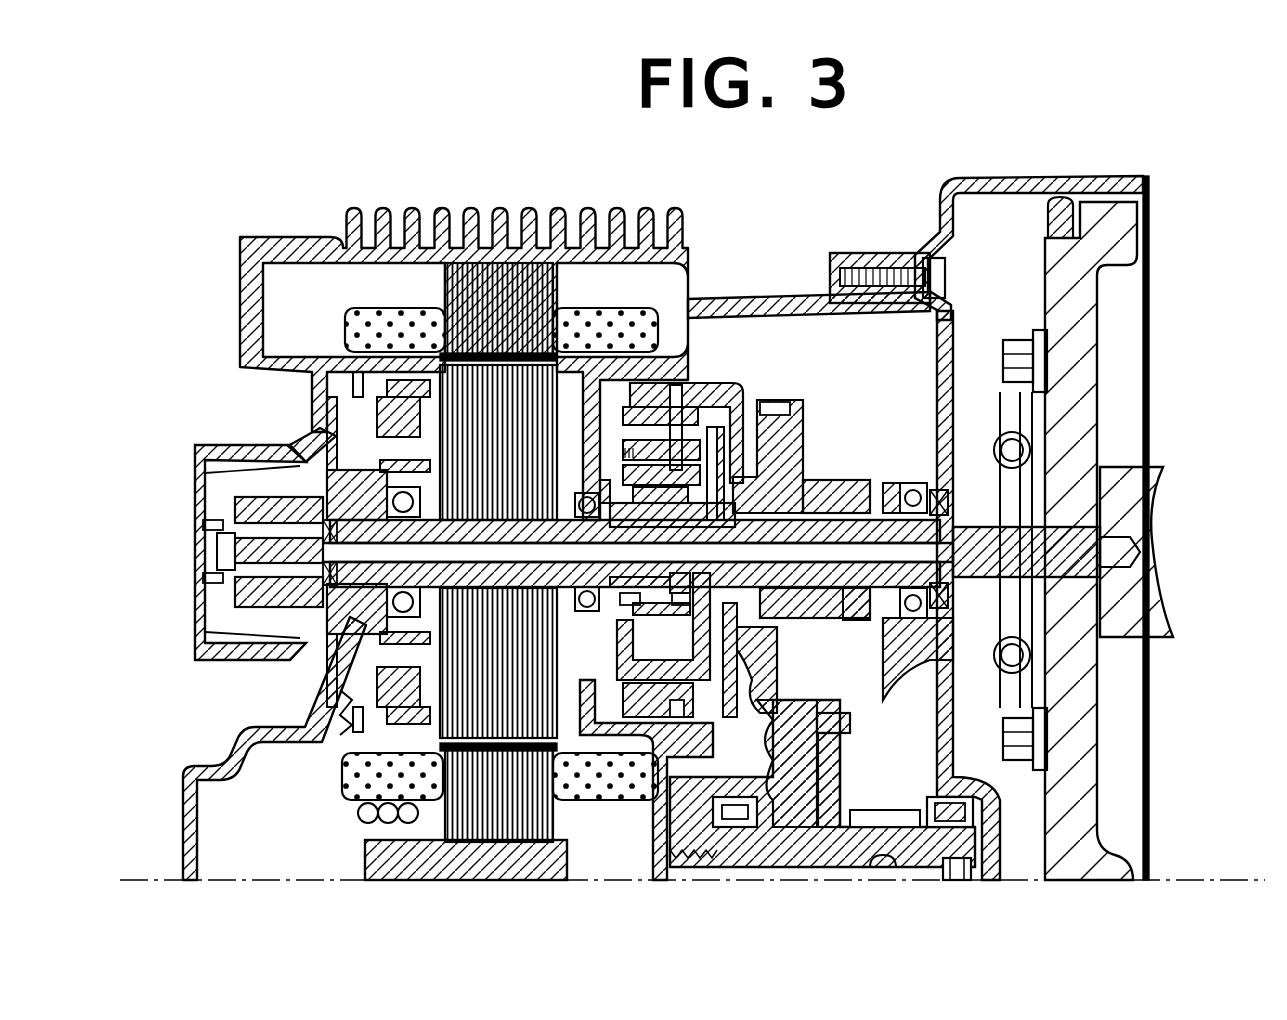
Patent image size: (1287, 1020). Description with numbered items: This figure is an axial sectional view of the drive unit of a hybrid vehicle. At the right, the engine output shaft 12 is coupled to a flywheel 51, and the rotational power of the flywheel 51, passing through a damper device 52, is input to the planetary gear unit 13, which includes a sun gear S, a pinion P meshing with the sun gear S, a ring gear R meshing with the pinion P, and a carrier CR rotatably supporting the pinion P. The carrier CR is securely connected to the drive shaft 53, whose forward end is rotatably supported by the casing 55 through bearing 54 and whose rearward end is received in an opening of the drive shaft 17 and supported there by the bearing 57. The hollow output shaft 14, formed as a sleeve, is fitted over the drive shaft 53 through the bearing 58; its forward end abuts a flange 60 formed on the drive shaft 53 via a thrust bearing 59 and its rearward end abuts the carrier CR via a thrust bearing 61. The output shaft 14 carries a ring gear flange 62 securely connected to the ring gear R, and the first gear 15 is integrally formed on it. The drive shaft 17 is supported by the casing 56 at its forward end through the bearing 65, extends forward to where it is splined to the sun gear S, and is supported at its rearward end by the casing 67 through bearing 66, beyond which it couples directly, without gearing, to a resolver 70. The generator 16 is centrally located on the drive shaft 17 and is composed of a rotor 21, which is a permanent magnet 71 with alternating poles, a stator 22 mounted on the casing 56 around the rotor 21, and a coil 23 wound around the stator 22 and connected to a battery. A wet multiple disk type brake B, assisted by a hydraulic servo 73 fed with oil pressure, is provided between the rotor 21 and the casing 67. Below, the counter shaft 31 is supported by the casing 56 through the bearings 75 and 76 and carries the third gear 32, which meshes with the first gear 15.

The engine output shaft 12 is at (1120, 475).
The planetary gear unit 13 is at (719, 362).
The hollow output shaft 14 is at (840, 488).
The first gear 15 is at (800, 405).
The generator 16 is at (430, 292).
The drive shaft 17 is at (512, 590).
The rotor 21 is at (437, 375).
The stator 22 is at (500, 270).
The coil 23 is at (345, 326).
The counter shaft 31 is at (958, 870).
The third gear 32 is at (812, 725).
The flywheel 51 is at (1090, 310).
The damper device 52 is at (1003, 400).
The drive shaft 53 is at (967, 548).
The bearing 54 is at (910, 483).
The casing 55 is at (1085, 178).
The casing 56 is at (340, 238).
The bearing 57 is at (648, 617).
The bearing 58 is at (845, 615).
The thrust bearing 59 is at (887, 665).
The flange 60 is at (895, 625).
The thrust bearing 61 is at (796, 612).
The ring gear flange 62 is at (790, 650).
The bearing 65 is at (575, 612).
The bearing 66 is at (425, 605).
The casing 67 is at (300, 442).
The resolver 70 is at (237, 500).
The permanent magnet 71 is at (458, 686).
The hydraulic servo 73 is at (338, 732).
The bearing 75 is at (975, 806).
The bearing 76 is at (740, 823).
The brake B is at (320, 679).
The carrier CR is at (768, 400).
The pinion P is at (640, 405).
The ring gear R is at (683, 395).
The sun gear S is at (668, 605).